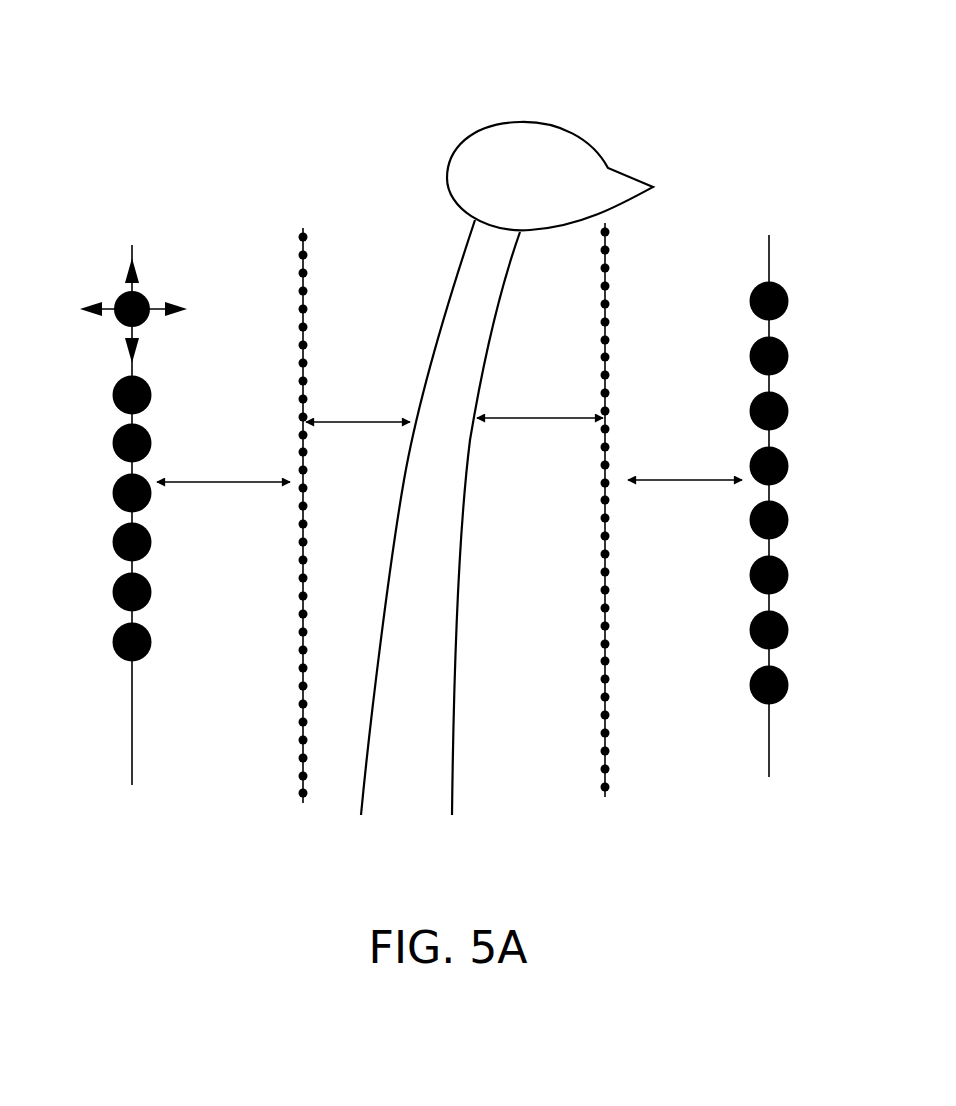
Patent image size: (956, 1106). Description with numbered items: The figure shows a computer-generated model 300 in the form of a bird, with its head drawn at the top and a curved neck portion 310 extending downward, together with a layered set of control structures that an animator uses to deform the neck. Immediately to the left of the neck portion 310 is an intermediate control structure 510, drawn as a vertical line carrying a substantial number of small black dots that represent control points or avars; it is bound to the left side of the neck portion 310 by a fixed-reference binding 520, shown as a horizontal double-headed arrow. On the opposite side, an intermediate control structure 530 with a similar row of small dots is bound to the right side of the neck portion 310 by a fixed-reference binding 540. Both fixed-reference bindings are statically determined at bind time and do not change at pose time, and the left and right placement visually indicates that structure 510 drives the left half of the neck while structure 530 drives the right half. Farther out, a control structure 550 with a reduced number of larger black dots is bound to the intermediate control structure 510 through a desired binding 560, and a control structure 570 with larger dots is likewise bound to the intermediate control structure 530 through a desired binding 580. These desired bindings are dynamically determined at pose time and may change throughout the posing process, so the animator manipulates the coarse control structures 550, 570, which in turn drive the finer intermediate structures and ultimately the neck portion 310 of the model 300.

The computer-generated model 300 is at (501, 98).
The neck portion 310 is at (466, 240).
The intermediate control structure 510 is at (300, 381).
The fixed-reference binding 520 is at (353, 425).
The intermediate control structure 530 is at (602, 377).
The fixed-reference binding 540 is at (531, 421).
The control structure 550 is at (129, 282).
The desired binding 560 is at (213, 485).
The control structure 570 is at (766, 271).
The desired binding 580 is at (683, 483).